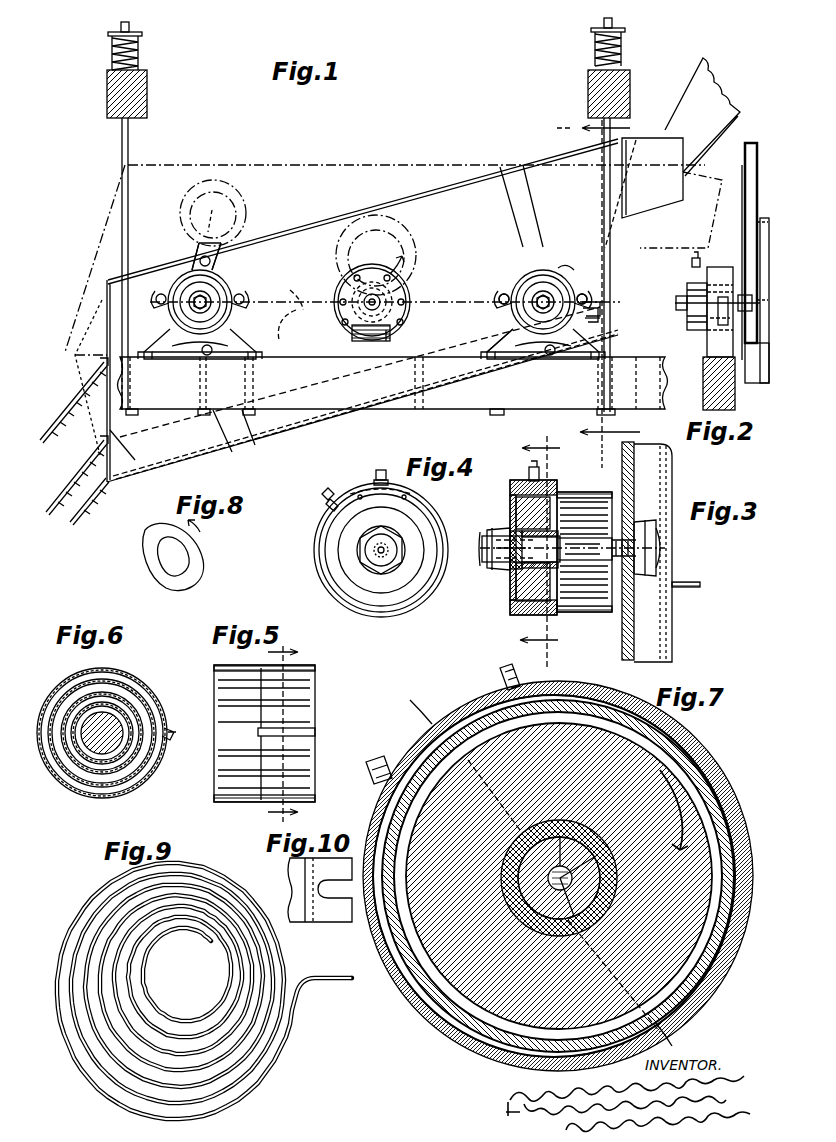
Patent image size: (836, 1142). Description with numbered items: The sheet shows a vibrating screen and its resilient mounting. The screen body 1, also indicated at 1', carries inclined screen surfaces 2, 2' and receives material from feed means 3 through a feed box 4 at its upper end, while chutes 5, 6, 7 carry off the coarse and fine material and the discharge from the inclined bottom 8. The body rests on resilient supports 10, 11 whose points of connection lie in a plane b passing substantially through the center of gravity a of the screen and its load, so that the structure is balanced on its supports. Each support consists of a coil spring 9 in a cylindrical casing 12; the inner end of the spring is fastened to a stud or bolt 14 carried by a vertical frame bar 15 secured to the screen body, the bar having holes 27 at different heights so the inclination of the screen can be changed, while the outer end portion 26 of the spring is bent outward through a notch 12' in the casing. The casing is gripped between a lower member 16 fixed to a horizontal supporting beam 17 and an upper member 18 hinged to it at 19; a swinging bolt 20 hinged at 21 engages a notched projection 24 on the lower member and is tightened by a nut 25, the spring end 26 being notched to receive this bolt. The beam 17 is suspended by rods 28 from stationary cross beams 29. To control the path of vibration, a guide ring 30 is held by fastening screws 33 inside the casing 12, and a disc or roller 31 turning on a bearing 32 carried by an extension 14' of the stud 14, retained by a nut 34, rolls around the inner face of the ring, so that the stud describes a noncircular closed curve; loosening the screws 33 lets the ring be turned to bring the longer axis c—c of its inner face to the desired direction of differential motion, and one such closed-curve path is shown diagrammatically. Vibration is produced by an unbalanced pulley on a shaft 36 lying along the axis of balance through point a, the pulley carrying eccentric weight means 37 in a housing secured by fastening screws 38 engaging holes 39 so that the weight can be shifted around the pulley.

In FIG. 1, the screen body 1 is at (406, 309).
In FIG. 1, the frame outline in alternate position 1' is at (87, 310).
In FIG. 1, the screen surface 2 is at (461, 291).
In FIG. 2, the screen surface 2 is at (767, 209).
In FIG. 3, the screen surface 2 is at (603, 458).
In FIG. 1, the screen surface 2' is at (360, 372).
In FIG. 2, the screen surface 2' is at (769, 280).
In FIG. 1, the feed means 3 is at (715, 92).
In FIG. 1, the feed box 4 is at (645, 140).
In FIG. 1, the chute 5 is at (64, 405).
In FIG. 1, the chute 6 is at (80, 476).
In FIG. 5, the chute 6 is at (278, 737).
In FIG. 1, the chute 7 is at (80, 514).
In FIG. 3, the chute 7 is at (540, 546).
In FIG. 1, the inclined bottom 8 is at (290, 426).
In FIG. 2, the inclined bottom 8 is at (758, 290).
In FIG. 3, the coil spring 9 is at (578, 608).
In FIG. 6, the coil spring 9 is at (120, 712).
In FIG. 5, the coil spring 9 is at (292, 710).
In FIG. 9, the coil spring 9 is at (72, 918).
In FIG. 1, the resilient support 10 is at (226, 282).
In FIG. 1, the resilient support 11 is at (524, 280).
In FIG. 3, the cylindrical casing 12 is at (584, 536).
In FIG. 6, the cylindrical casing 12 is at (104, 733).
In FIG. 5, the cylindrical casing 12 is at (276, 724).
In FIG. 7, the cylindrical casing 12 is at (562, 876).
In FIG. 5, the notch 12' is at (297, 727).
In FIG. 3, the stud or bolt 14 is at (662, 548).
In FIG. 3, the extension of stud 14' is at (558, 560).
In FIG. 4, the extension of stud 14' is at (404, 550).
In FIG. 7, the extension of stud 14' is at (642, 880).
In FIG. 1, the vertical frame bar 15 is at (525, 214).
In FIG. 3, the vertical frame bar 15 is at (640, 642).
In FIG. 1, the lower member 16 is at (505, 334).
In FIG. 1, the horizontal supporting beam 17 is at (628, 400).
In FIG. 1, the upper member 18 is at (562, 278).
In FIG. 1, the hinge 19 is at (498, 300).
In FIG. 1, the swinging bolt 20 is at (598, 316).
In FIG. 1, the hinge of swinging bolt 21 is at (584, 296).
In FIG. 1, the fork or notched projection 24 is at (590, 310).
In FIG. 2, the fork or notched projection 24 is at (718, 305).
In FIG. 2, the nut 25 is at (712, 316).
In FIG. 1, the outer end portion of spring 26 is at (590, 302).
In FIG. 6, the outer end portion of spring 26 is at (172, 736).
In FIG. 10, the outer end portion of spring 26 is at (326, 920).
In FIG. 9, the outer end portion of spring 26 is at (328, 980).
In FIG. 1, the holes 27 is at (222, 256).
In FIG. 3, the holes 27 is at (624, 628).
In FIG. 1, the rods 28 is at (128, 136).
In FIG. 1, the stationary cross beams 29 is at (147, 101).
In FIG. 3, the guide ring 30 is at (512, 492).
In FIG. 4, the guide ring 30 is at (381, 550).
In FIG. 7, the guide ring 30 is at (690, 764).
In FIG. 3, the disc or roller 31 is at (522, 520).
In FIG. 4, the disc or roller 31 is at (381, 550).
In FIG. 7, the disc or roller 31 is at (440, 1022).
In FIG. 3, the bearing 32 is at (522, 566).
In FIG. 7, the bearing 32 is at (600, 918).
In FIG. 3, the fastening screws 33 is at (534, 471).
In FIG. 4, the fastening screws 33 is at (375, 472).
In FIG. 7, the fastening screws 33 is at (516, 680).
In FIG. 3, the nut 34 is at (492, 532).
In FIG. 4, the nut 34 is at (370, 564).
In FIG. 1, the shaft 36 is at (345, 318).
In FIG. 1, the weight means 37 is at (352, 337).
In FIG. 1, the fastening screws 38 is at (392, 337).
In FIG. 1, the holes 39 is at (384, 304).
In FIG. 1, the center of gravity a is at (336, 290).
In FIG. 1, the plane of connections b is at (287, 333).
In FIG. 8, the longer axis of guide ring face c is at (173, 555).
In FIG. 7, the longer axis of guide ring face c is at (554, 871).